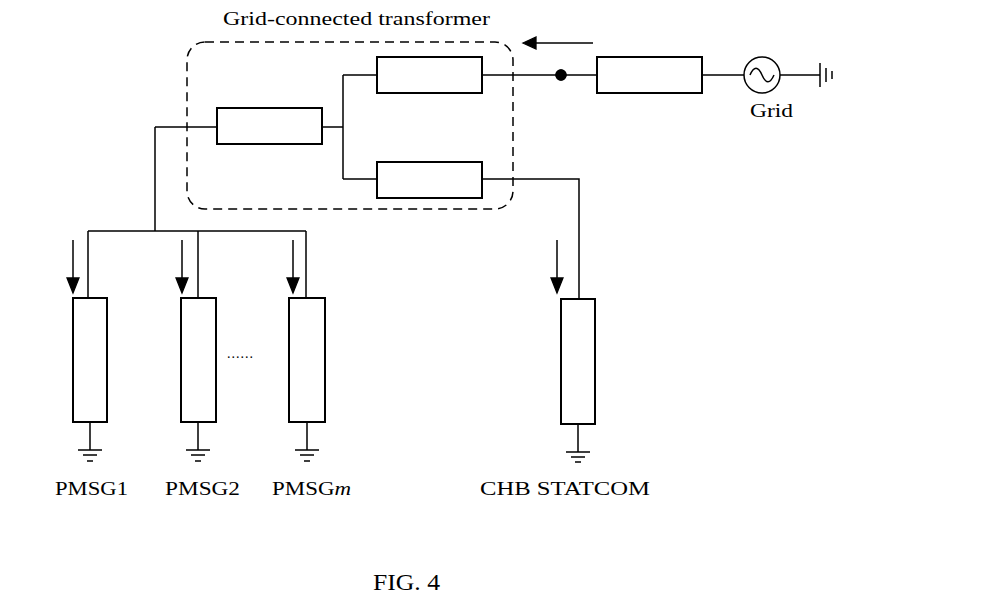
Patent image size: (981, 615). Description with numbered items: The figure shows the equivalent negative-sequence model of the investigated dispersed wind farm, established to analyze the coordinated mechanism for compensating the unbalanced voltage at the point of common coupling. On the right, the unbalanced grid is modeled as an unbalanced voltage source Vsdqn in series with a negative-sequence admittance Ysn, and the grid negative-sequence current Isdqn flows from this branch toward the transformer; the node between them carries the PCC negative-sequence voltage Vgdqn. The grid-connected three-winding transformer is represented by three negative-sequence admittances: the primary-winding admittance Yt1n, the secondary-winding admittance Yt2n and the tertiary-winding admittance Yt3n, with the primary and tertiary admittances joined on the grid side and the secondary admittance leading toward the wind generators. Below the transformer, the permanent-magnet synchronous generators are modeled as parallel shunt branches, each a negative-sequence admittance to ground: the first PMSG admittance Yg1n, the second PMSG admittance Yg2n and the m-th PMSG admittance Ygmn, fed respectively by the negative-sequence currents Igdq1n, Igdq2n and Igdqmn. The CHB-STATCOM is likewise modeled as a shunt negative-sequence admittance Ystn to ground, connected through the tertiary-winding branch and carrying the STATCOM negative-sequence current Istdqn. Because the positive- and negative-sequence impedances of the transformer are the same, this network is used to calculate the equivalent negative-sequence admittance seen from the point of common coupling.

The primary-winding negative-sequence admittance Yt1n is at (429, 88).
The secondary-winding negative-sequence admittance Yt2n is at (269, 141).
The tertiary-winding negative-sequence admittance Yt3n is at (429, 170).
The grid negative-sequence admittance Ysn is at (649, 62).
The unbalanced grid voltage Vsdqn is at (762, 60).
The grid negative-sequence current Isdqn is at (558, 31).
The PCC negative-sequence voltage Vgdqn is at (565, 103).
The first PMSG negative-sequence current Igdq1n is at (45, 266).
The second PMSG negative-sequence current Igdq2n is at (154, 266).
The m-th PMSG negative-sequence current Igdqmn is at (263, 266).
The CHB-STATCOM negative-sequence current Istdqn is at (530, 266).
The first PMSG negative-sequence admittance Yg1n is at (71, 360).
The second PMSG negative-sequence admittance Yg2n is at (178, 360).
The m-th PMSG negative-sequence admittance Ygmn is at (286, 360).
The CHB-STATCOM negative-sequence admittance Ystn is at (559, 361).